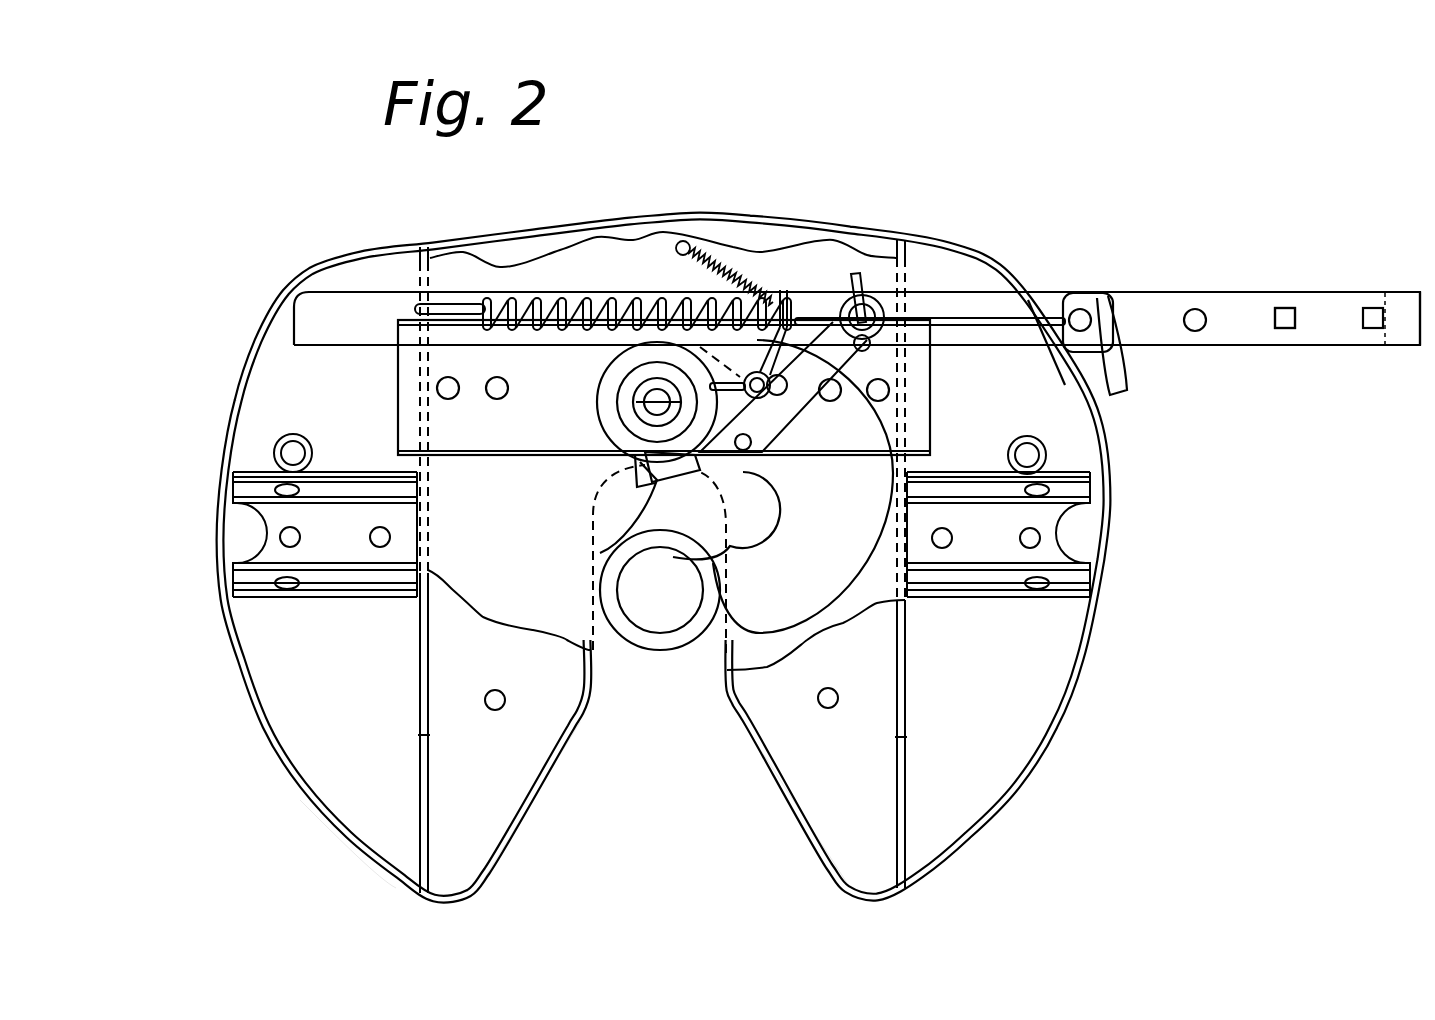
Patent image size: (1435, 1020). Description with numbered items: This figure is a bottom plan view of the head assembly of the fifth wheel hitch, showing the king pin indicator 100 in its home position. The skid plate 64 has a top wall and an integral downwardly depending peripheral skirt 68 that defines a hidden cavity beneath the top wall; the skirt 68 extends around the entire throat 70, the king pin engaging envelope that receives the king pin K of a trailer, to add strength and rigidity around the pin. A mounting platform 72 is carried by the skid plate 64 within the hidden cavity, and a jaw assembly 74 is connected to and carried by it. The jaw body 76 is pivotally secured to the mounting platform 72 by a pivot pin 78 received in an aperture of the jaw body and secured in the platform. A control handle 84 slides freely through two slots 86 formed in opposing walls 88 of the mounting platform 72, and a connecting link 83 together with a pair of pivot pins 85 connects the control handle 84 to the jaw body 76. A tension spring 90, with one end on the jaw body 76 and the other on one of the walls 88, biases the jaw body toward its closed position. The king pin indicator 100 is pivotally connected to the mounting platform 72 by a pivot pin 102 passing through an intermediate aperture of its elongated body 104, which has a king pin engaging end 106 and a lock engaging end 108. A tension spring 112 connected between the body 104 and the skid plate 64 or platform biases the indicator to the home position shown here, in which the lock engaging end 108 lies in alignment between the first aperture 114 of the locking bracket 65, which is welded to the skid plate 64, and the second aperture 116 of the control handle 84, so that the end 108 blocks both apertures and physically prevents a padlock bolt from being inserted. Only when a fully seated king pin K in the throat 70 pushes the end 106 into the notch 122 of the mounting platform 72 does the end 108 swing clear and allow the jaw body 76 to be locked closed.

The skid plate 64 is at (1040, 670).
The locking bracket 65 is at (1130, 373).
The peripheral skirt 68 is at (1005, 268).
The throat 70 is at (755, 760).
The mounting platform 72 is at (477, 742).
The jaw assembly 74 is at (766, 170).
The jaw body 76 is at (773, 613).
The pivot pin 78 is at (652, 385).
The connecting link 83 is at (820, 357).
The control handle 84 is at (1215, 310).
The pivot pins 85 is at (667, 292).
The slots 86 is at (425, 290).
The walls 88 is at (420, 673).
The tension spring 90 is at (535, 298).
The king pin indicator 100 is at (817, 285).
The pivot pin 102 is at (760, 598).
The elongated body 104 is at (770, 425).
The king pin engaging end 106 is at (600, 553).
The lock engaging end 108 is at (1077, 300).
The tension spring 112 is at (712, 262).
The first aperture 114 is at (1090, 312).
The second aperture 116 is at (1207, 325).
The notch 122 is at (645, 465).
The king pin K is at (657, 590).